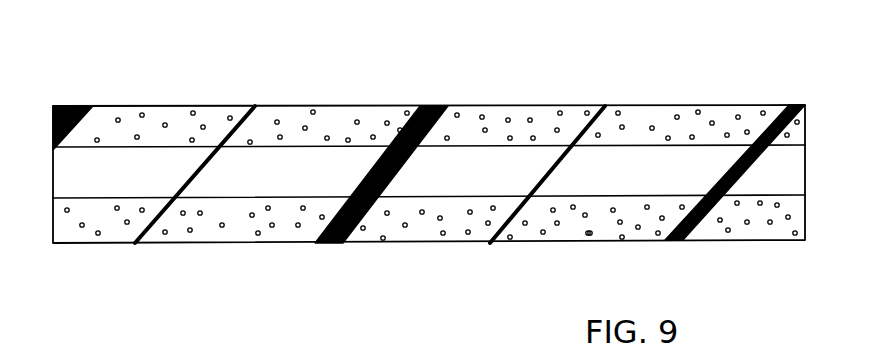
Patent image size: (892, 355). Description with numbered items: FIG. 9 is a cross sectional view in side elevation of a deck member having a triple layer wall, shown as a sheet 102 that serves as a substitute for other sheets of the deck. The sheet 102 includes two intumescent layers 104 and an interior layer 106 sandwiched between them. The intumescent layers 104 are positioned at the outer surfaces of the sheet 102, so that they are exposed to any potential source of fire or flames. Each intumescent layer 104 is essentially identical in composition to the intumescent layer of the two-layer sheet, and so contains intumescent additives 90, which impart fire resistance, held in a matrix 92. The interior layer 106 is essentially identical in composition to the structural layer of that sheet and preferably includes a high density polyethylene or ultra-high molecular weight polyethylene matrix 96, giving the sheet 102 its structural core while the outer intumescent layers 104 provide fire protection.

The sheet 102 is at (678, 84).
The matrix 92 is at (127, 117).
The matrix 96 is at (315, 187).
The intumescent layers 104 is at (335, 120).
The interior layer 106 is at (455, 173).
The intumescent additives 90 is at (313, 110).